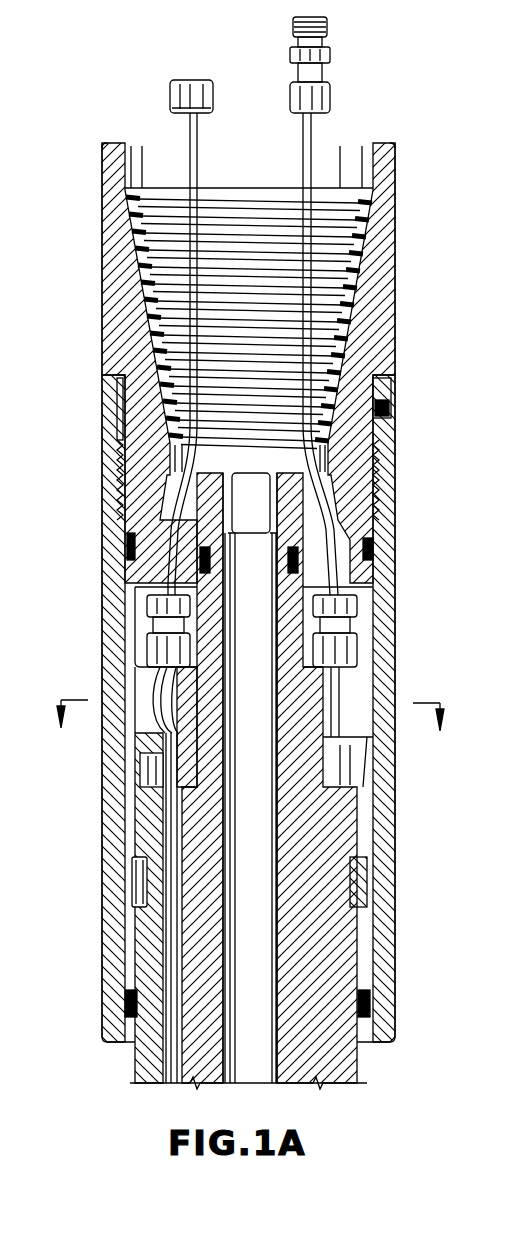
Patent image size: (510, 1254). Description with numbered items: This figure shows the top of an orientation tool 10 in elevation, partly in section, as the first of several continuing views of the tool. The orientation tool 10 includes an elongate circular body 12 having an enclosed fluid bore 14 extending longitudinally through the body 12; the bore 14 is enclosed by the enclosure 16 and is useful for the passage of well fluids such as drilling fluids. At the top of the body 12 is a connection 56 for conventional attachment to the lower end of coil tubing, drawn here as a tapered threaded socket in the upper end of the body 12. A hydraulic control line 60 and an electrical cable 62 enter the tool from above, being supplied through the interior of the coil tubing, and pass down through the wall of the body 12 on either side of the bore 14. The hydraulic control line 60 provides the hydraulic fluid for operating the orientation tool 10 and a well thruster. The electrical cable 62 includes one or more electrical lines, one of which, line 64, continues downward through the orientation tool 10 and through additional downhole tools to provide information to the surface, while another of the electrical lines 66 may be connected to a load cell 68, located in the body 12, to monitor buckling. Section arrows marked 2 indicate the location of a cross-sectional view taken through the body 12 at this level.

The orientation tool 10 is at (397, 648).
The elongate circular body 12 is at (395, 900).
The fluid bore 14 is at (255, 942).
The enclosure 16 is at (273, 830).
The connection 56 is at (367, 325).
The hydraulic control line 60 is at (313, 131).
The electrical cable 62 is at (188, 128).
The electrical line 64 is at (170, 830).
The electrical line 66 is at (148, 713).
The load cell 68 is at (148, 675).
The section line 2- 2 is at (250, 728).